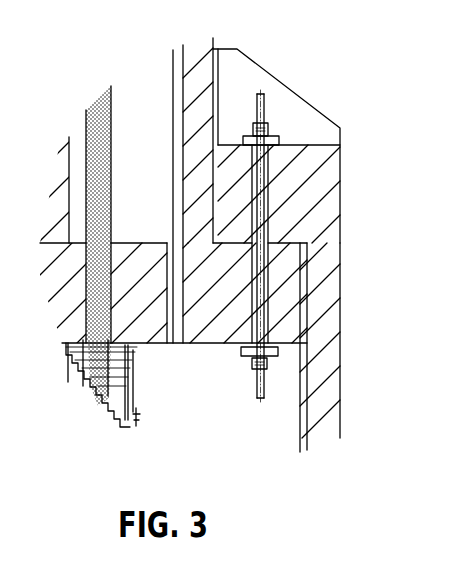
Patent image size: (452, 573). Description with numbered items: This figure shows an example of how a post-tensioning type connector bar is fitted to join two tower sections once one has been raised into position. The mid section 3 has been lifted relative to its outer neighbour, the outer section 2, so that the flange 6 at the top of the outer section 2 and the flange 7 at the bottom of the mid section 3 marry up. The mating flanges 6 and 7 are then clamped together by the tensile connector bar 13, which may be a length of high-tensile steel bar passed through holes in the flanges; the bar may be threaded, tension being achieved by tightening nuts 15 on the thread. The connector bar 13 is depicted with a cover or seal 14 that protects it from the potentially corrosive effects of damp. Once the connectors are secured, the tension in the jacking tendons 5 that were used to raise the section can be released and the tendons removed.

The outer section 2 is at (322, 421).
The mid section 3 is at (200, 45).
The jacking tendon 5 is at (100, 103).
The flange at the top of a section 6 is at (312, 188).
The flange at the bottom of a section 7 is at (286, 326).
The connector bar 13 is at (261, 256).
The sleeve 14 is at (252, 313).
The nut 15 is at (268, 130).